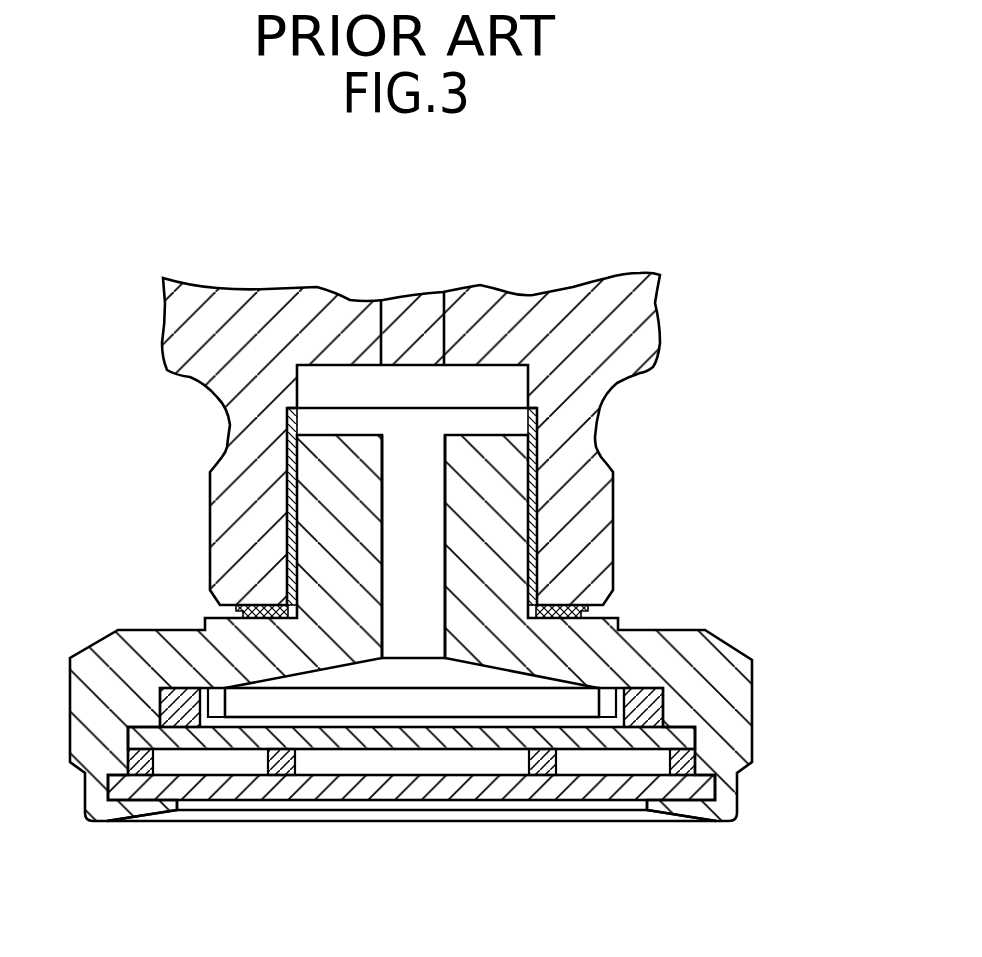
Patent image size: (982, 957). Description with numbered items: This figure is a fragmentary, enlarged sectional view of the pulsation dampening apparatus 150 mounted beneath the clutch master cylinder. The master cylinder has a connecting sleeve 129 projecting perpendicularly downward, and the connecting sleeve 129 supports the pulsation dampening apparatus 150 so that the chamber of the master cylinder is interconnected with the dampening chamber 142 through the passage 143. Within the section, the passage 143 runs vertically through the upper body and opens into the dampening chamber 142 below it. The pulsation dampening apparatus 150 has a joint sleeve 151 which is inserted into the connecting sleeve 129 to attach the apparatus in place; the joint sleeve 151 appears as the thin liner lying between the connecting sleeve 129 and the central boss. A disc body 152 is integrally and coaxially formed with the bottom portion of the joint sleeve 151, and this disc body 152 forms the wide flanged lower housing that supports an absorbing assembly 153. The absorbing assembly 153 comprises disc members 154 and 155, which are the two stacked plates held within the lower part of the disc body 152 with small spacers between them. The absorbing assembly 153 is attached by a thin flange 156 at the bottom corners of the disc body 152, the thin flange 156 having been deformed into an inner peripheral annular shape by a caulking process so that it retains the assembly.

The connecting sleeve 129 is at (238, 501).
The dampening chamber 142 is at (430, 471).
The passage 143 is at (415, 318).
The pulsation dampening apparatus 150 is at (682, 618).
The joint sleeve 151 is at (492, 548).
The disc body 152 is at (738, 716).
The absorbing assembly 153 is at (567, 825).
The disc member 154 is at (332, 742).
The disc member 155 is at (452, 790).
The thin flange 156 is at (148, 806).